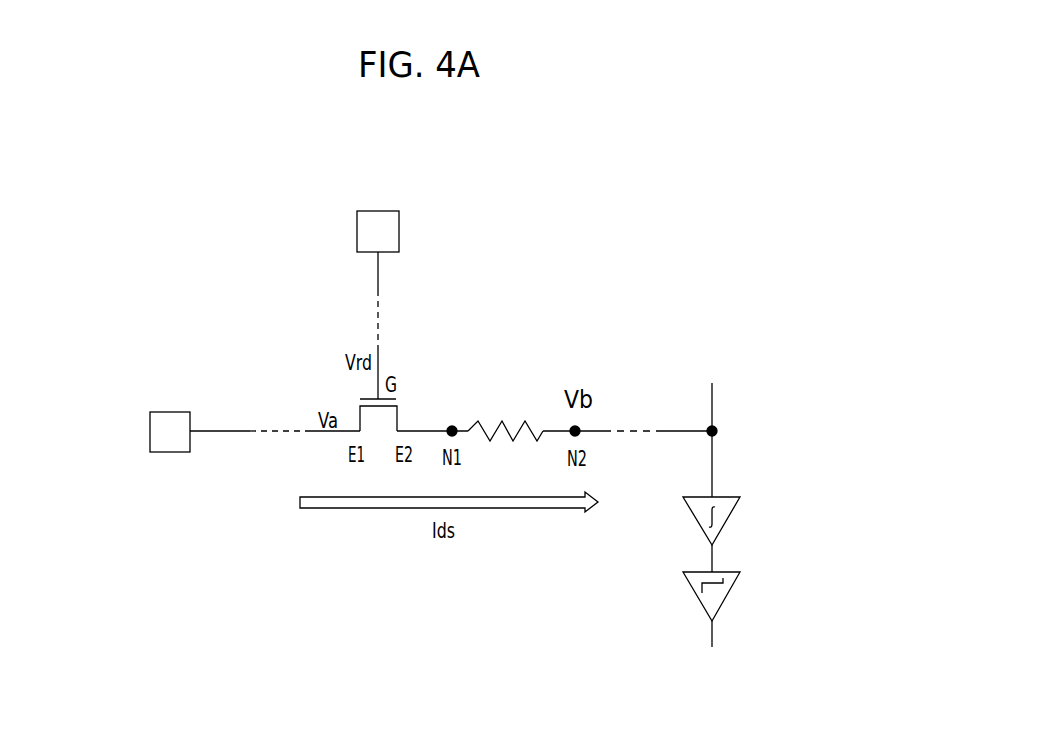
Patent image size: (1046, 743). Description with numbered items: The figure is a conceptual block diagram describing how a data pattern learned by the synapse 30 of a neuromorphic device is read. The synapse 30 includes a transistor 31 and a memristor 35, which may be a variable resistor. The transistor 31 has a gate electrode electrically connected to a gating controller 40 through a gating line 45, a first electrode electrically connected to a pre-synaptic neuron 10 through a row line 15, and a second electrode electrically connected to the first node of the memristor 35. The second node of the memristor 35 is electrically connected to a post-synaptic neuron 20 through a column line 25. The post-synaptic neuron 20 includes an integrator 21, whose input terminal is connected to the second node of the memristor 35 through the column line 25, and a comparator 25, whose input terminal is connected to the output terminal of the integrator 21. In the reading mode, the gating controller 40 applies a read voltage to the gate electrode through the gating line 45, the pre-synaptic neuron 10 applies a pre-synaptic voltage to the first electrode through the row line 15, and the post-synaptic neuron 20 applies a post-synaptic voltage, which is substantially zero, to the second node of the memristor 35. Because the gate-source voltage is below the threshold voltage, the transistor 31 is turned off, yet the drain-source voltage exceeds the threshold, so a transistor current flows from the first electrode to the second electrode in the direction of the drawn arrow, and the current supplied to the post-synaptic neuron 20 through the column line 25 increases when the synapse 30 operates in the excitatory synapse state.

The pre-synaptic neuron 10 is at (150, 427).
The row line 15 is at (227, 424).
The post-synaptic neuron 20 is at (776, 554).
The integrator 21 is at (755, 534).
The column line / comparator 25 is at (723, 458).
The synapse 30 is at (475, 383).
The transistor 31 is at (412, 403).
The memristor 35 is at (506, 398).
The gating controller 40 is at (400, 228).
The gating line 45 is at (367, 268).